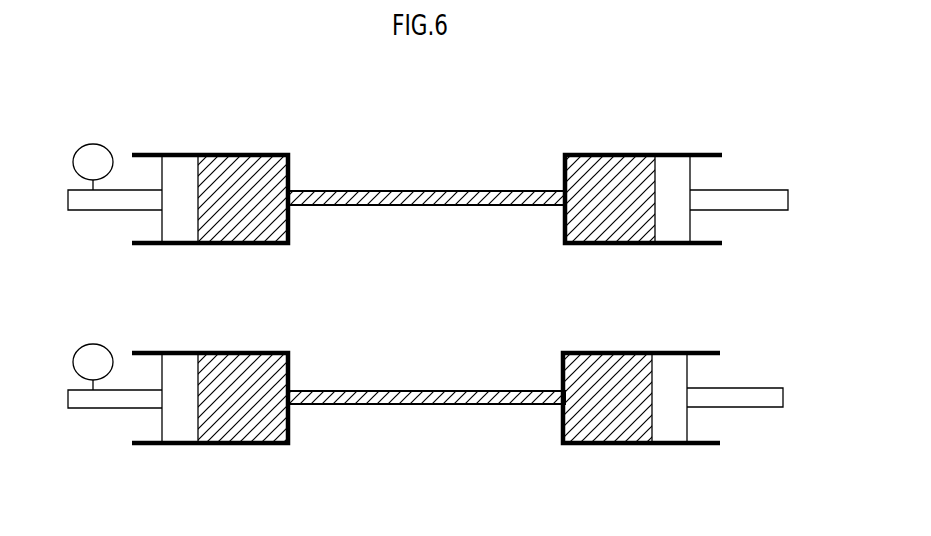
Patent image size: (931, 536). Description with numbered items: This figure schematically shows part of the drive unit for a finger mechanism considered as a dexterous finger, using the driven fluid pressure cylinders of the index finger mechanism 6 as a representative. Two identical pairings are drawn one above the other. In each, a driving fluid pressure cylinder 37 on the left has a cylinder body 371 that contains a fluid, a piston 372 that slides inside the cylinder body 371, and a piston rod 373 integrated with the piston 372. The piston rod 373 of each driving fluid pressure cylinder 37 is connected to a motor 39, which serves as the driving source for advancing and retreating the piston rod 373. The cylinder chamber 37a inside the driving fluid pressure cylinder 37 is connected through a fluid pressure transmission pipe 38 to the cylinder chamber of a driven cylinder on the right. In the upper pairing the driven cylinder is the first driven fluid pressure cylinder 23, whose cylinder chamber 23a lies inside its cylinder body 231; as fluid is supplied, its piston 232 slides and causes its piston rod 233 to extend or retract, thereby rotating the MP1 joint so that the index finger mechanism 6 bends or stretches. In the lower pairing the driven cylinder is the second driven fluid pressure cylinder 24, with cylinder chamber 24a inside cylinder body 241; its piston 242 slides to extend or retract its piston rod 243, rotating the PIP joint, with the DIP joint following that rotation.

The index finger mechanism 6 is at (425, 115).
The first driven fluid pressure cylinder 23 is at (630, 135).
The cylinder body 231 is at (590, 157).
The piston 232 is at (672, 242).
The piston rod 233 is at (757, 211).
The cylinder chamber 23a is at (592, 240).
The second driven fluid pressure cylinder 24 is at (629, 461).
The cylinder body 241 is at (590, 440).
The piston 242 is at (672, 358).
The piston rod 243 is at (755, 409).
The cylinder chamber 24a is at (590, 357).
The driving fluid pressure cylinder 37 is at (200, 137).
The cylinder body 371 is at (240, 158).
The piston 372 is at (180, 240).
The piston rod 373 is at (93, 211).
The cylinder chamber 37a is at (243, 236).
The fluid pressure transmission pipe 38 is at (425, 190).
The motor 39 is at (93, 144).